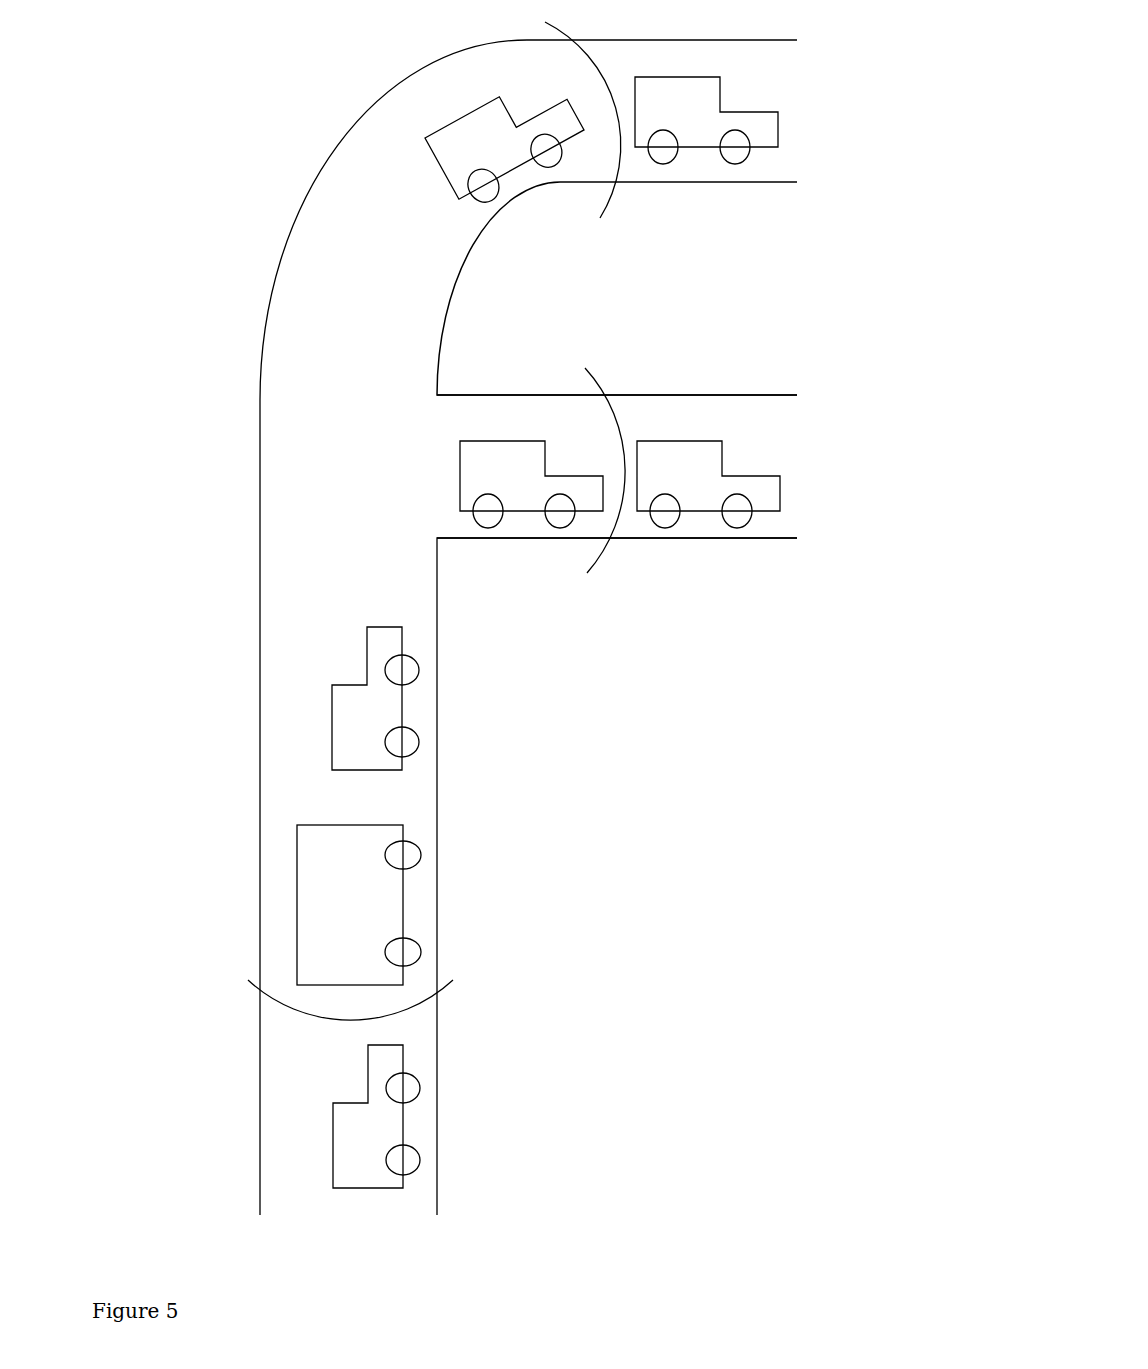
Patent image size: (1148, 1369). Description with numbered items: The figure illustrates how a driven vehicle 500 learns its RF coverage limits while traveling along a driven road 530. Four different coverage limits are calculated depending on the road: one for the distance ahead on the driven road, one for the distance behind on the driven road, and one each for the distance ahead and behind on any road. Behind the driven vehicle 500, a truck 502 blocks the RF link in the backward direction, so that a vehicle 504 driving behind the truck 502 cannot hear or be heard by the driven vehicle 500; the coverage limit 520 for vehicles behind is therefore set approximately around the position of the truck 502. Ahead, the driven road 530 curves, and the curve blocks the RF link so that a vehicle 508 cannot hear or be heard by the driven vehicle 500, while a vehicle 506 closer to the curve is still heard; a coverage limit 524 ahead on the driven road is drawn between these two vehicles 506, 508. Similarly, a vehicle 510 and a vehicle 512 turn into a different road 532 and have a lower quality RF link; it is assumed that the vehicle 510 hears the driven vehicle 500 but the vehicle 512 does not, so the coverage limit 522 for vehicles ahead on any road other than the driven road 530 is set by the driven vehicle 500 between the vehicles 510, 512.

The driven vehicle 500 is at (375, 698).
The truck 502 is at (359, 905).
The vehicle 504 is at (376, 1116).
The vehicle 506 is at (509, 141).
The vehicle 508 is at (706, 119).
The vehicle 510 is at (531, 484).
The vehicle 512 is at (708, 484).
The coverage limit 520 is at (432, 995).
The coverage limit 522 is at (635, 513).
The coverage limit 524 is at (641, 158).
The driven road 530 is at (528, 653).
The different road 532 is at (677, 466).